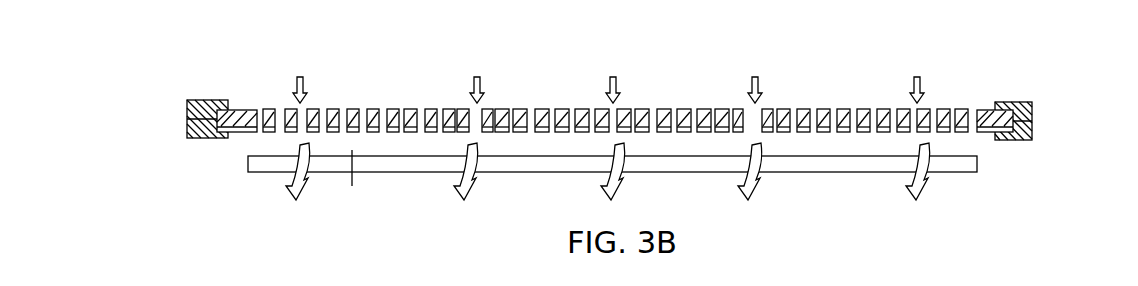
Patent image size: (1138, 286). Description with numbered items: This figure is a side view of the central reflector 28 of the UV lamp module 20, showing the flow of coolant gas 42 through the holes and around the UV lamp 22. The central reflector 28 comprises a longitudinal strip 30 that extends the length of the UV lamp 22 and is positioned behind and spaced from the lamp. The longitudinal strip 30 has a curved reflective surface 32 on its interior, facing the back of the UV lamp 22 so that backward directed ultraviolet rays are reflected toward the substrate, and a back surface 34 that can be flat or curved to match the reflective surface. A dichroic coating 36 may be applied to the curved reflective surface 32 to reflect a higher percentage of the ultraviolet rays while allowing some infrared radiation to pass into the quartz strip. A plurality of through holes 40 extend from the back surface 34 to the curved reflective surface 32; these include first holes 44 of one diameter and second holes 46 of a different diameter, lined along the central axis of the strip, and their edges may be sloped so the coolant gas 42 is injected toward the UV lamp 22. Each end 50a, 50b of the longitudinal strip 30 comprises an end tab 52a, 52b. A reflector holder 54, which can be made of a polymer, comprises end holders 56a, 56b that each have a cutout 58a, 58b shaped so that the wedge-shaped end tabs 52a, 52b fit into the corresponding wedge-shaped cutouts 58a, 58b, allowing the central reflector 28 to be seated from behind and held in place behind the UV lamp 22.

The UV lamp module 20 is at (447, 80).
The UV lamp 22 is at (548, 173).
The central reflector 28 is at (543, 103).
The longitudinal strip 30 is at (947, 108).
The curved reflective surface 32 is at (801, 134).
The back surface 34 is at (352, 150).
The dichroic coating 36 is at (352, 181).
The through holes 40 is at (420, 112).
The coolant gas 42 is at (621, 85).
The first holes 44 is at (730, 108).
The second holes 46 is at (478, 107).
The end of the longitudinal strip 50a is at (240, 100).
The end of the longitudinal strip 50b is at (976, 100).
The end tab 52a is at (241, 132).
The end tab 52b is at (983, 133).
The reflector holder 54 is at (1035, 110).
The end holder 56a is at (205, 100).
The end holder 56b is at (1032, 138).
The cutout 58a is at (187, 122).
The cutout 58b is at (1030, 122).